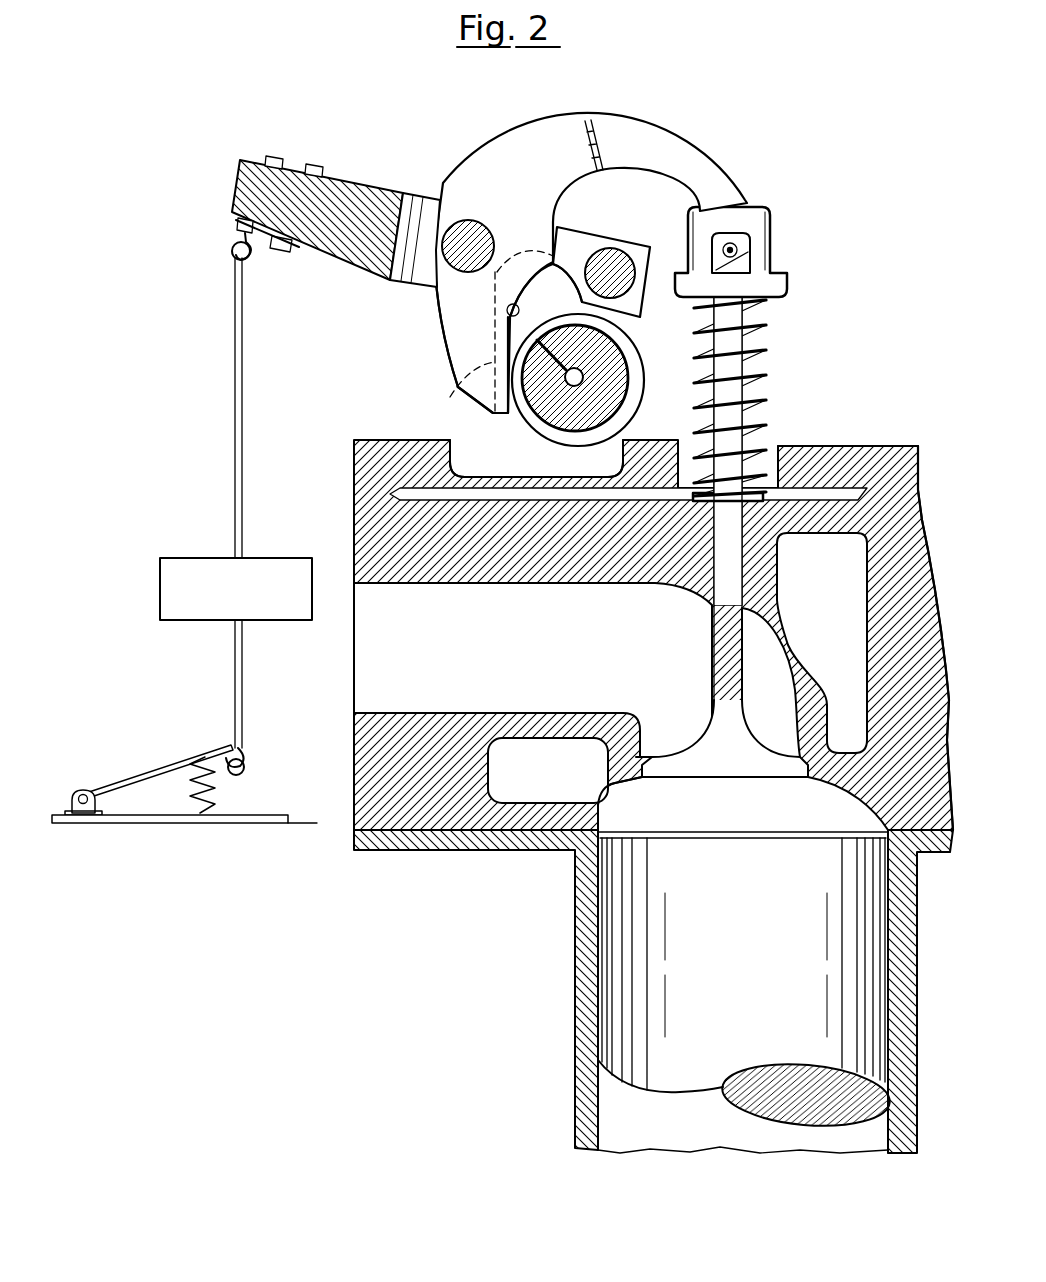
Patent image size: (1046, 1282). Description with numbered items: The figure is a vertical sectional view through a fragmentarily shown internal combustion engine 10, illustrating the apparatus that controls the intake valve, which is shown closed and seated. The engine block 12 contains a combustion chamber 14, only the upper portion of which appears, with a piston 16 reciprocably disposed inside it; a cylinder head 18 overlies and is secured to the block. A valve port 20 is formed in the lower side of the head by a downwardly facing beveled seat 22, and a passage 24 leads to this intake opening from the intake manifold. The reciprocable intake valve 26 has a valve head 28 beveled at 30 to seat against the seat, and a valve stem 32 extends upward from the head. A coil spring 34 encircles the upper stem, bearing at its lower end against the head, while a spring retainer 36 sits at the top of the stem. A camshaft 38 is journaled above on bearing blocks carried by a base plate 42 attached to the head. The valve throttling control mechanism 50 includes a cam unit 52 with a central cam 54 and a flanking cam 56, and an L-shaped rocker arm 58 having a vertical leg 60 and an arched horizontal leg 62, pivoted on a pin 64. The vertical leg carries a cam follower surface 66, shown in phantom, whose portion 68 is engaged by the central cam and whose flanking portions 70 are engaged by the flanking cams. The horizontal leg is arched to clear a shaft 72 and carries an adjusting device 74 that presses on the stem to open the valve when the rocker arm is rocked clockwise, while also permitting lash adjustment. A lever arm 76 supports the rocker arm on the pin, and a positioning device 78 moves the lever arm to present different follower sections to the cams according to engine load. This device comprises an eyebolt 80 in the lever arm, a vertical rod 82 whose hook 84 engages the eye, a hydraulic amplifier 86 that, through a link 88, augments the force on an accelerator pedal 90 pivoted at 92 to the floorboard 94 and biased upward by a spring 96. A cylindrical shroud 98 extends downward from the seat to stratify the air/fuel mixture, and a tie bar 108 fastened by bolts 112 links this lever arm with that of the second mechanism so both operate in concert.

The internal combustion engine 10 is at (410, 860).
The engine block 12 is at (540, 850).
The combustion chamber 14 is at (575, 1062).
The piston 16 is at (740, 852).
The cylinder head 18 is at (930, 532).
The valve port 20 is at (768, 672).
The beveled seat 22 is at (640, 757).
The passage 24 is at (388, 661).
The intake valve 26 is at (705, 560).
The valve head 28 is at (742, 740).
The bevel of valve head 30 is at (696, 778).
The valve stem 32 is at (708, 632).
The coil spring 34 is at (768, 376).
The spring retainer 36 is at (761, 234).
The camshaft 38 is at (562, 412).
The base plate 42 is at (848, 446).
The valve throttling control mechanism 50 is at (567, 238).
The cam unit 52 is at (652, 409).
The central cam 54 is at (644, 380).
The flanking cam 56 is at (620, 345).
The rocker arm 58 is at (510, 130).
The vertical leg 60 is at (430, 314).
The horizontal leg 62 is at (601, 118).
The pin 64 is at (484, 226).
The cam follower surface 66 is at (532, 292).
The follower surface portion 68 is at (462, 392).
The flanking portion 70 is at (495, 300).
The shaft 72 is at (603, 249).
The adjusting device 74 is at (748, 236).
The lever arm 76 is at (355, 180).
The positioning device 78 is at (189, 501).
The eyebolt 80 is at (230, 252).
The vertical rod 82 is at (232, 380).
The hook 84 is at (238, 233).
The hydraulic amplifier 86 is at (170, 620).
The link 88 is at (232, 686).
The accelerator pedal 90 is at (147, 770).
The pivot 92 is at (80, 790).
The floorboard 94 is at (306, 822).
The spring 96 is at (216, 812).
The shroud 98 is at (648, 785).
The tie bar 108 is at (258, 262).
The bolts 112 is at (315, 163).